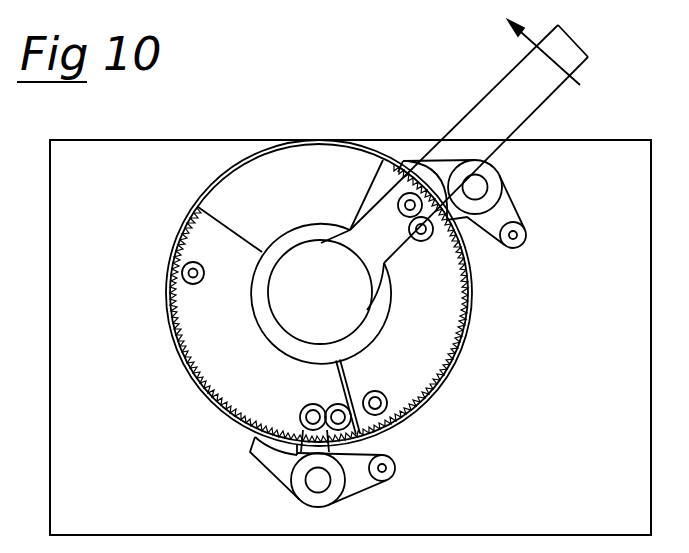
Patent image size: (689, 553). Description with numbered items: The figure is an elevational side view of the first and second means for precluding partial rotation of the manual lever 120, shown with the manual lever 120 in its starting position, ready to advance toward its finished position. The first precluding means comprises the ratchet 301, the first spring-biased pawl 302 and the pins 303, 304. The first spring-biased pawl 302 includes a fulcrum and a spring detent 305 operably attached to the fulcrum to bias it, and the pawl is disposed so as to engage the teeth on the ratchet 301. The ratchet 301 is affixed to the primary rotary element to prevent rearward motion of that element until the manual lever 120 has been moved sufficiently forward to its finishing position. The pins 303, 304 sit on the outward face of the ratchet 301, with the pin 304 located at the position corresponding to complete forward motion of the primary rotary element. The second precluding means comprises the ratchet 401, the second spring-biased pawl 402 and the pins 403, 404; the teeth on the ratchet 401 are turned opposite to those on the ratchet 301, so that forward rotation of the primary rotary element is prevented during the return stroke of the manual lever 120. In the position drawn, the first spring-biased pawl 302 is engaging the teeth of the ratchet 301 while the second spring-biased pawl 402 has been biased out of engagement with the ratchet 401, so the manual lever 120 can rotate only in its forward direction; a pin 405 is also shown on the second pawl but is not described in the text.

The manual lever 120 is at (502, 83).
The ratchet 301 is at (433, 306).
The first spring-biased pawl 302 is at (514, 198).
The pin 303 is at (398, 200).
The pin 304 is at (378, 392).
The spring detent 305 is at (522, 244).
The ratchet 401 is at (230, 340).
The second spring-biased pawl 402 is at (250, 472).
The pin 403 is at (339, 404).
The pin 404 is at (200, 265).
The pin 405 is at (390, 478).